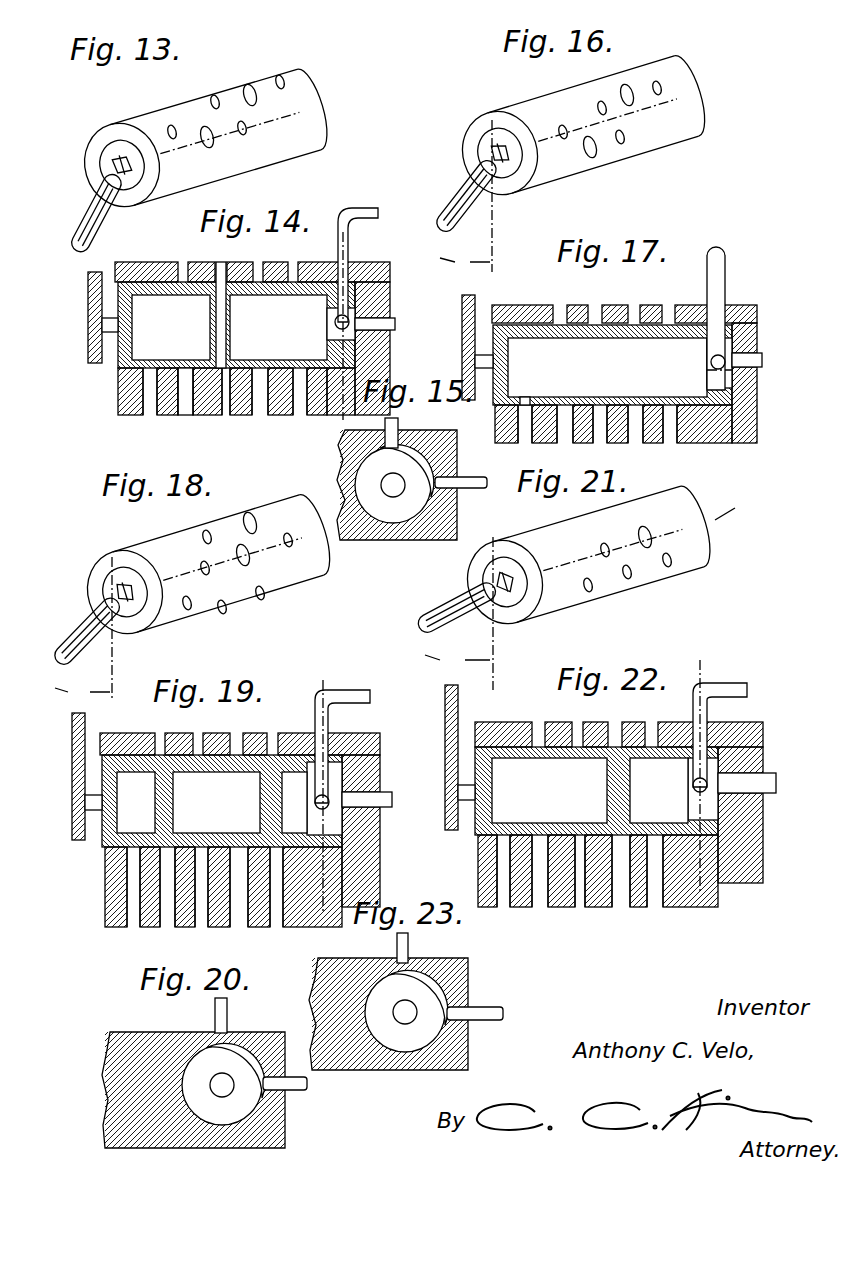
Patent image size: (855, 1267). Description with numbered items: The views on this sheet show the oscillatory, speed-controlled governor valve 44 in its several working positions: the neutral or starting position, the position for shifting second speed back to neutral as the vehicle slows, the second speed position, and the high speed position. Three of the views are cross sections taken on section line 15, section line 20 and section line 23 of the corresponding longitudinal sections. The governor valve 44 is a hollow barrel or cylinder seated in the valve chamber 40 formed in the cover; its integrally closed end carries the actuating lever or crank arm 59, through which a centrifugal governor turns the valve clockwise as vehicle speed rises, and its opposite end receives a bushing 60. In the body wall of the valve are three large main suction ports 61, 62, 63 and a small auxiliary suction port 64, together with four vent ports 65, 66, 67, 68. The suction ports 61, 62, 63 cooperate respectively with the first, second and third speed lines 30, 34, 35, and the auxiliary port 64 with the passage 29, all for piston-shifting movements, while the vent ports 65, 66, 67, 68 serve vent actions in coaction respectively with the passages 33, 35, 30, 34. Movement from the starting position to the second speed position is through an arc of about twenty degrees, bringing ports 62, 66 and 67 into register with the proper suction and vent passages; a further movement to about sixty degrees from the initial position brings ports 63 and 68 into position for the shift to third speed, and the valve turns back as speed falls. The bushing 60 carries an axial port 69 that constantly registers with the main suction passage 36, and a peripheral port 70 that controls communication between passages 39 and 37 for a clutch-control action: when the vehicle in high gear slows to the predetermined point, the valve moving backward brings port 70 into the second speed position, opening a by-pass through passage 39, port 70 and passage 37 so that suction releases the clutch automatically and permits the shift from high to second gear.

In FIG. 14, the section line 15 is at (336, 301).
In FIG. 19, the section line 20 is at (321, 797).
In FIG. 22, the section line 23 is at (703, 778).
In FIG. 14, the passage 29 is at (150, 409).
In FIG. 17, the passage 29 is at (524, 437).
In FIG. 19, the passage 29 is at (133, 912).
In FIG. 22, the passage 29 is at (503, 895).
In FIG. 14, the first speed line 30 is at (185, 407).
In FIG. 17, the first speed line 30 is at (563, 403).
In FIG. 19, the first speed line 30 is at (167, 912).
In FIG. 22, the first speed line 30 is at (540, 893).
In FIG. 14, the passage 33 is at (226, 406).
In FIG. 17, the passage 33 is at (600, 437).
In FIG. 19, the passage 33 is at (202, 912).
In FIG. 22, the passage 33 is at (580, 890).
In FIG. 14, the second speed line 34 is at (260, 406).
In FIG. 17, the second speed line 34 is at (636, 436).
In FIG. 19, the second speed line 34 is at (239, 912).
In FIG. 22, the second speed line 34 is at (620, 887).
In FIG. 14, the third speed line 35 is at (300, 406).
In FIG. 17, the third speed line 35 is at (672, 436).
In FIG. 19, the third speed line 35 is at (276, 912).
In FIG. 22, the third speed line 35 is at (655, 889).
In FIG. 14, the main suction passage 36 is at (392, 326).
In FIG. 17, the main suction passage 36 is at (755, 366).
In FIG. 19, the main suction passage 36 is at (386, 800).
In FIG. 22, the main suction passage 36 is at (764, 800).
In FIG. 14, the passage 37 is at (352, 320).
In FIG. 17, the passage 37 is at (727, 360).
In FIG. 15, the passage 37 is at (466, 489).
In FIG. 19, the passage 37 is at (330, 800).
In FIG. 22, the passage 37 is at (710, 783).
In FIG. 20, the passage 37 is at (306, 1084).
In FIG. 23, the passage 37 is at (503, 1014).
In FIG. 14, the passage 39 is at (350, 258).
In FIG. 17, the passage 39 is at (724, 252).
In FIG. 15, the passage 39 is at (398, 424).
In FIG. 19, the passage 39 is at (371, 697).
In FIG. 22, the passage 39 is at (745, 685).
In FIG. 20, the passage 39 is at (228, 1013).
In FIG. 23, the passage 39 is at (397, 945).
In FIG. 14, the valve chamber 40 is at (160, 268).
In FIG. 17, the valve chamber 40 is at (535, 306).
In FIG. 15, the valve chamber 40 is at (457, 462).
In FIG. 19, the valve chamber 40 is at (135, 741).
In FIG. 22, the valve chamber 40 is at (515, 731).
In FIG. 20, the valve chamber 40 is at (250, 1034).
In FIG. 23, the valve chamber 40 is at (468, 972).
In FIG. 13, the governor valve 44 is at (318, 95).
In FIG. 16, the governor valve 44 is at (700, 93).
In FIG. 14, the governor valve 44 is at (118, 370).
In FIG. 17, the governor valve 44 is at (720, 352).
In FIG. 18, the governor valve 44 is at (120, 548).
In FIG. 21, the governor valve 44 is at (710, 530).
In FIG. 19, the governor valve 44 is at (104, 848).
In FIG. 22, the governor valve 44 is at (475, 836).
In FIG. 13, the crank arm 59 is at (80, 232).
In FIG. 16, the crank arm 59 is at (456, 192).
In FIG. 18, the crank arm 59 is at (94, 629).
In FIG. 21, the crank arm 59 is at (466, 613).
In FIG. 14, the bushing 60 is at (370, 290).
In FIG. 15, the bushing 60 is at (385, 516).
In FIG. 20, the bushing 60 is at (240, 1119).
In FIG. 23, the bushing 60 is at (415, 1046).
In FIG. 13, the main suction port 61 is at (210, 144).
In FIG. 16, the main suction port 61 is at (591, 157).
In FIG. 14, the main suction port 61 is at (184, 370).
In FIG. 18, the main suction port 61 is at (222, 614).
In FIG. 13, the main suction port 62 is at (249, 86).
In FIG. 16, the main suction port 62 is at (627, 86).
In FIG. 18, the main suction port 62 is at (250, 560).
In FIG. 21, the main suction port 62 is at (627, 580).
In FIG. 19, the main suction port 62 is at (240, 840).
In FIG. 18, the main suction port 63 is at (252, 514).
In FIG. 21, the main suction port 63 is at (645, 527).
In FIG. 22, the main suction port 63 is at (648, 826).
In FIG. 13, the auxiliary suction port 64 is at (169, 130).
In FIG. 16, the auxiliary suction port 64 is at (563, 140).
In FIG. 17, the auxiliary suction port 64 is at (525, 404).
In FIG. 18, the auxiliary suction port 64 is at (186, 611).
In FIG. 13, the vent port 65 is at (246, 129).
In FIG. 16, the vent port 65 is at (625, 140).
In FIG. 14, the vent port 65 is at (226, 320).
In FIG. 18, the vent port 65 is at (262, 599).
In FIG. 13, the vent port 66 is at (284, 82).
In FIG. 16, the vent port 66 is at (662, 86).
In FIG. 18, the vent port 66 is at (292, 534).
In FIG. 21, the vent port 66 is at (672, 562).
In FIG. 19, the vent port 66 is at (280, 836).
In FIG. 13, the vent port 67 is at (212, 98).
In FIG. 16, the vent port 67 is at (598, 104).
In FIG. 18, the vent port 67 is at (200, 566).
In FIG. 21, the vent port 67 is at (588, 593).
In FIG. 19, the vent port 67 is at (158, 838).
In FIG. 18, the vent port 68 is at (207, 530).
In FIG. 21, the vent port 68 is at (604, 546).
In FIG. 22, the vent port 68 is at (608, 826).
In FIG. 15, the axial port 69 is at (396, 493).
In FIG. 20, the axial port 69 is at (220, 1091).
In FIG. 23, the axial port 69 is at (400, 1021).
In FIG. 15, the peripheral port 70 is at (420, 453).
In FIG. 20, the peripheral port 70 is at (252, 1068).
In FIG. 23, the peripheral port 70 is at (412, 978).